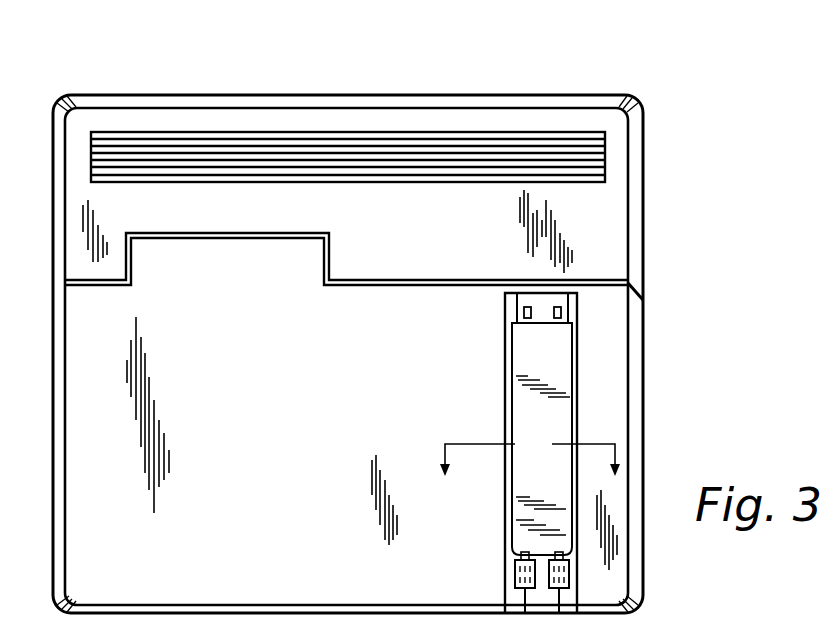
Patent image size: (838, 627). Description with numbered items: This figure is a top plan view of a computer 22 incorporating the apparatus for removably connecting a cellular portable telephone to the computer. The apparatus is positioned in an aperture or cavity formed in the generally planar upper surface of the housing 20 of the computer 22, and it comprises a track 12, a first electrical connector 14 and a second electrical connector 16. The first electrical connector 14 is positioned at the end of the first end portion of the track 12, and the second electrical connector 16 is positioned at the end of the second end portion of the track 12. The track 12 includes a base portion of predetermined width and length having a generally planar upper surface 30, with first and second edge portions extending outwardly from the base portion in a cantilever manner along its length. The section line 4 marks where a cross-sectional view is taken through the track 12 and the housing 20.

The cartridge housing 22 is at (606, 214).
The shutter 20 is at (290, 424).
The connector slot 16 is at (542, 312).
The circuit card 12 is at (560, 372).
The memory chip 30 is at (563, 532).
The terminals 14 is at (540, 593).
The section line 4- 4 is at (530, 465).